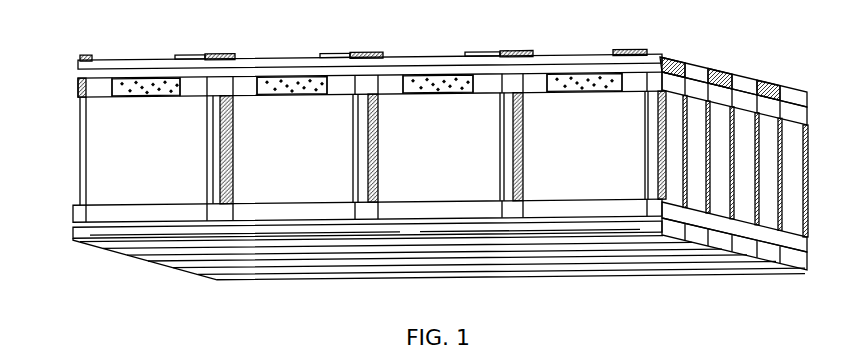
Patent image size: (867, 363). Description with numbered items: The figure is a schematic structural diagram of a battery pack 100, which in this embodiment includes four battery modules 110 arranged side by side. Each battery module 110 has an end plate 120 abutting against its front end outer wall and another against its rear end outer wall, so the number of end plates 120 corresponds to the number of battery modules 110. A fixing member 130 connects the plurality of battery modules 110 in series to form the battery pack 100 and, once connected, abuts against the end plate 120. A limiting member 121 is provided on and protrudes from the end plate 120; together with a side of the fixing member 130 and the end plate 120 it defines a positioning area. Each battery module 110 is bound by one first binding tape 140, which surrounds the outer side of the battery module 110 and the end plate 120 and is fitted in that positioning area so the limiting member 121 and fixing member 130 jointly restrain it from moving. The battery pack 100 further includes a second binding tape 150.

The battery pack 100 is at (412, 10).
The battery module 110 is at (167, 258).
The end plate 120 is at (93, 160).
The limiting member 121 is at (80, 98).
The fixing member 130 is at (226, 70).
The first binding tape 140 is at (83, 90).
The second binding tape 150 is at (78, 212).